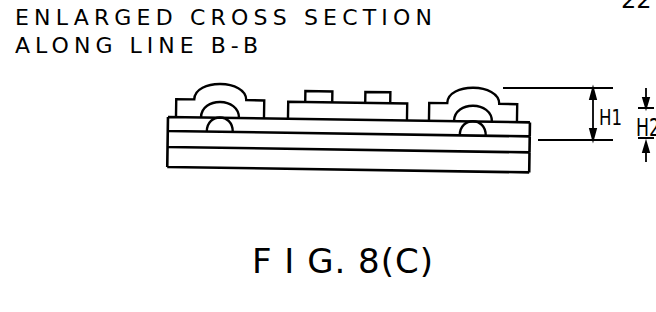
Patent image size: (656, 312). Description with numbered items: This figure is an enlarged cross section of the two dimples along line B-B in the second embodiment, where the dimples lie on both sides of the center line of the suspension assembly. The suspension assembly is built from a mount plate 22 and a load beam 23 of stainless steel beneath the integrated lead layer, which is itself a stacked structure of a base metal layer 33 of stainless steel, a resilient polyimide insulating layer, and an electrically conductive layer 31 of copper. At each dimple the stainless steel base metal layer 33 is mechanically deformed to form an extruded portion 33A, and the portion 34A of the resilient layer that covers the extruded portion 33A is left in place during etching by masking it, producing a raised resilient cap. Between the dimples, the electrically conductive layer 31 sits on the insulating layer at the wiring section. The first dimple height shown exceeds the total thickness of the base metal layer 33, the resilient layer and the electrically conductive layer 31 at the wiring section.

The mount plate 22 is at (526, 170).
The load beam 23 is at (524, 147).
The base metal layer 33 is at (522, 131).
The extruded portion 33A is at (228, 110).
The portion of the resilient layer 34A is at (207, 89).
The electrically conductive layer 31 is at (374, 89).